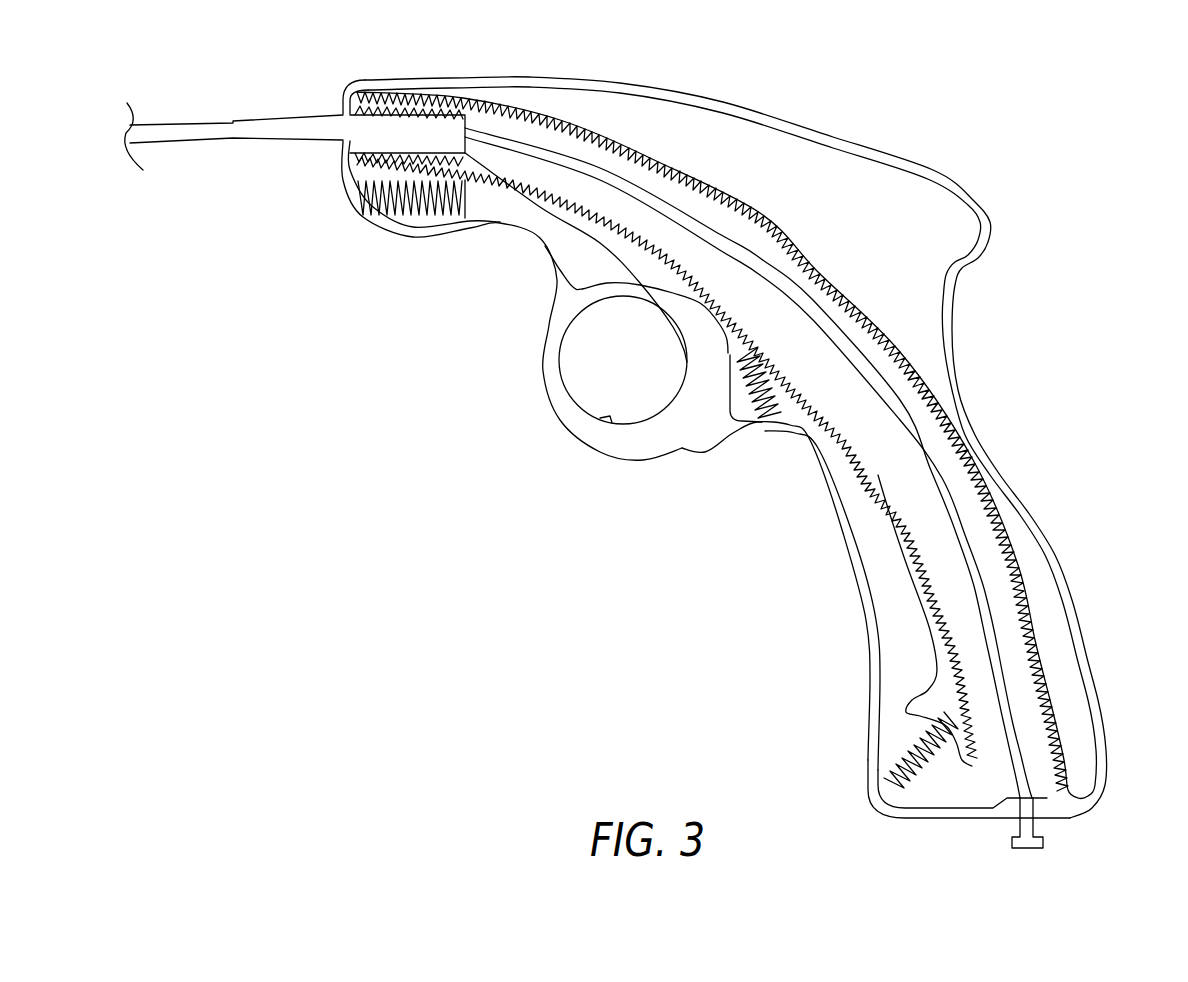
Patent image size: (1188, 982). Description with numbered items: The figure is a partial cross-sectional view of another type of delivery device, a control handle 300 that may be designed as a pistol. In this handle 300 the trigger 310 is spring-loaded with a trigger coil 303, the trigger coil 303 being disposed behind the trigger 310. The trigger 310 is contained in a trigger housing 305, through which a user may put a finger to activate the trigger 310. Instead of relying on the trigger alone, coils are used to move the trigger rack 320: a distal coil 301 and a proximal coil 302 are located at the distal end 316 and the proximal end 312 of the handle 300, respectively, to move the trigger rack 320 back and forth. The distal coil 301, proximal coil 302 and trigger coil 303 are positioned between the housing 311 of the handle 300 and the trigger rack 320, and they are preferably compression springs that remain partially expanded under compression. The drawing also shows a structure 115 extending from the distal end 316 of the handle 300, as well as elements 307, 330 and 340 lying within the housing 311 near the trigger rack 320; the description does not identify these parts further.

The nozzle tip 115 is at (187, 120).
The control handle 300 is at (927, 130).
The distal coil 301 is at (410, 218).
The proximal coil 302 is at (903, 747).
The trigger coil 303 is at (767, 420).
The trigger housing 305 is at (560, 410).
The rack block 307 is at (436, 122).
The trigger 310 is at (685, 410).
The housing 311 is at (937, 267).
The proximal end 312 is at (1097, 800).
The distal end 316 is at (348, 96).
The trigger rack 320 is at (990, 730).
The rack 330 is at (1037, 700).
The rack 340 is at (990, 637).